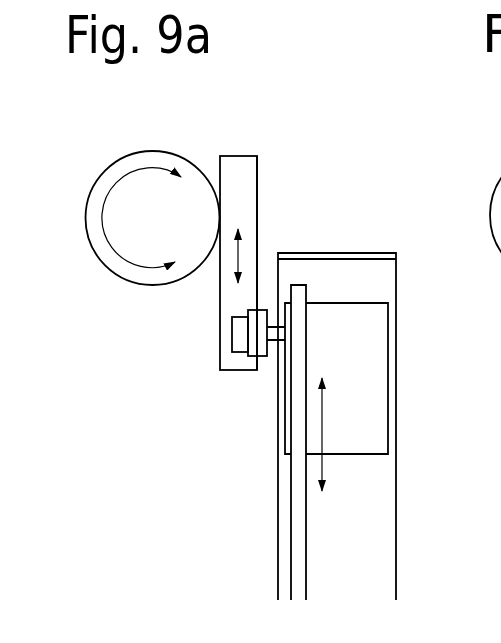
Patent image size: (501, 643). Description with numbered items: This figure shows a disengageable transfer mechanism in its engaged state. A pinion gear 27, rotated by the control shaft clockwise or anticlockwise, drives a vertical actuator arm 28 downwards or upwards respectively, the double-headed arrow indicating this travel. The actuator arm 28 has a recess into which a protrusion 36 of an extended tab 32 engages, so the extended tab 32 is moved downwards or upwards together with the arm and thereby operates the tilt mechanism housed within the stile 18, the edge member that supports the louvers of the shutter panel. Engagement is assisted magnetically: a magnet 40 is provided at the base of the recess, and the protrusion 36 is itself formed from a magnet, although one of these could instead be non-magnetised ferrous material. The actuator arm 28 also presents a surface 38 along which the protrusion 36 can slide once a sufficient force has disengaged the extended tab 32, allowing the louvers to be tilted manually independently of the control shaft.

The pinion gear 27 is at (145, 205).
The actuator arm 28 is at (243, 188).
The surface 38 is at (259, 253).
The magnet 40 is at (238, 336).
The protrusion 36 is at (255, 348).
The stile 18 is at (333, 530).
The extended tab 32 is at (297, 533).